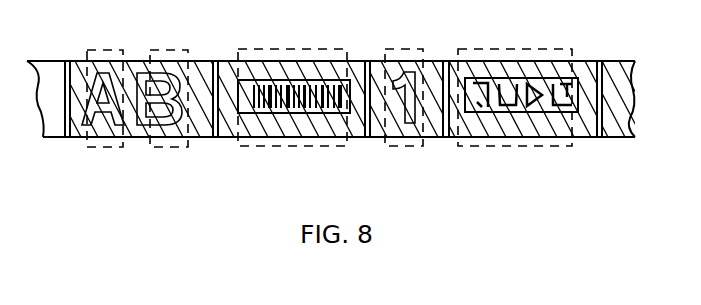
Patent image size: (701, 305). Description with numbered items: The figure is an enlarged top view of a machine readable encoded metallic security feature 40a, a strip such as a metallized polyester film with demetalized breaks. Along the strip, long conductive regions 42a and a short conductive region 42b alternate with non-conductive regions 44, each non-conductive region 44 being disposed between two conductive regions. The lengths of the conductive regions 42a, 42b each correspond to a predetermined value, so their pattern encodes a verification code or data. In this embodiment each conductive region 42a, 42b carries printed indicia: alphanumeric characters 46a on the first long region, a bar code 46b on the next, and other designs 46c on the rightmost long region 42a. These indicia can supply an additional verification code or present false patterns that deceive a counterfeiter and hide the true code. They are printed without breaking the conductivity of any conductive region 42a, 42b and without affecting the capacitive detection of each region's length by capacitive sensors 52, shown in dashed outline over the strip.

The machine readable encoded metallic security feature 40a is at (62, 18).
The long conductive region 42a is at (285, 67).
The short conductive region 42b is at (397, 67).
The non-conductive region 44 is at (218, 138).
The alphanumeric characters 46a is at (90, 125).
The bar code 46b is at (292, 113).
The other designs 46c is at (505, 108).
The capacitive sensor 52 is at (98, 47).